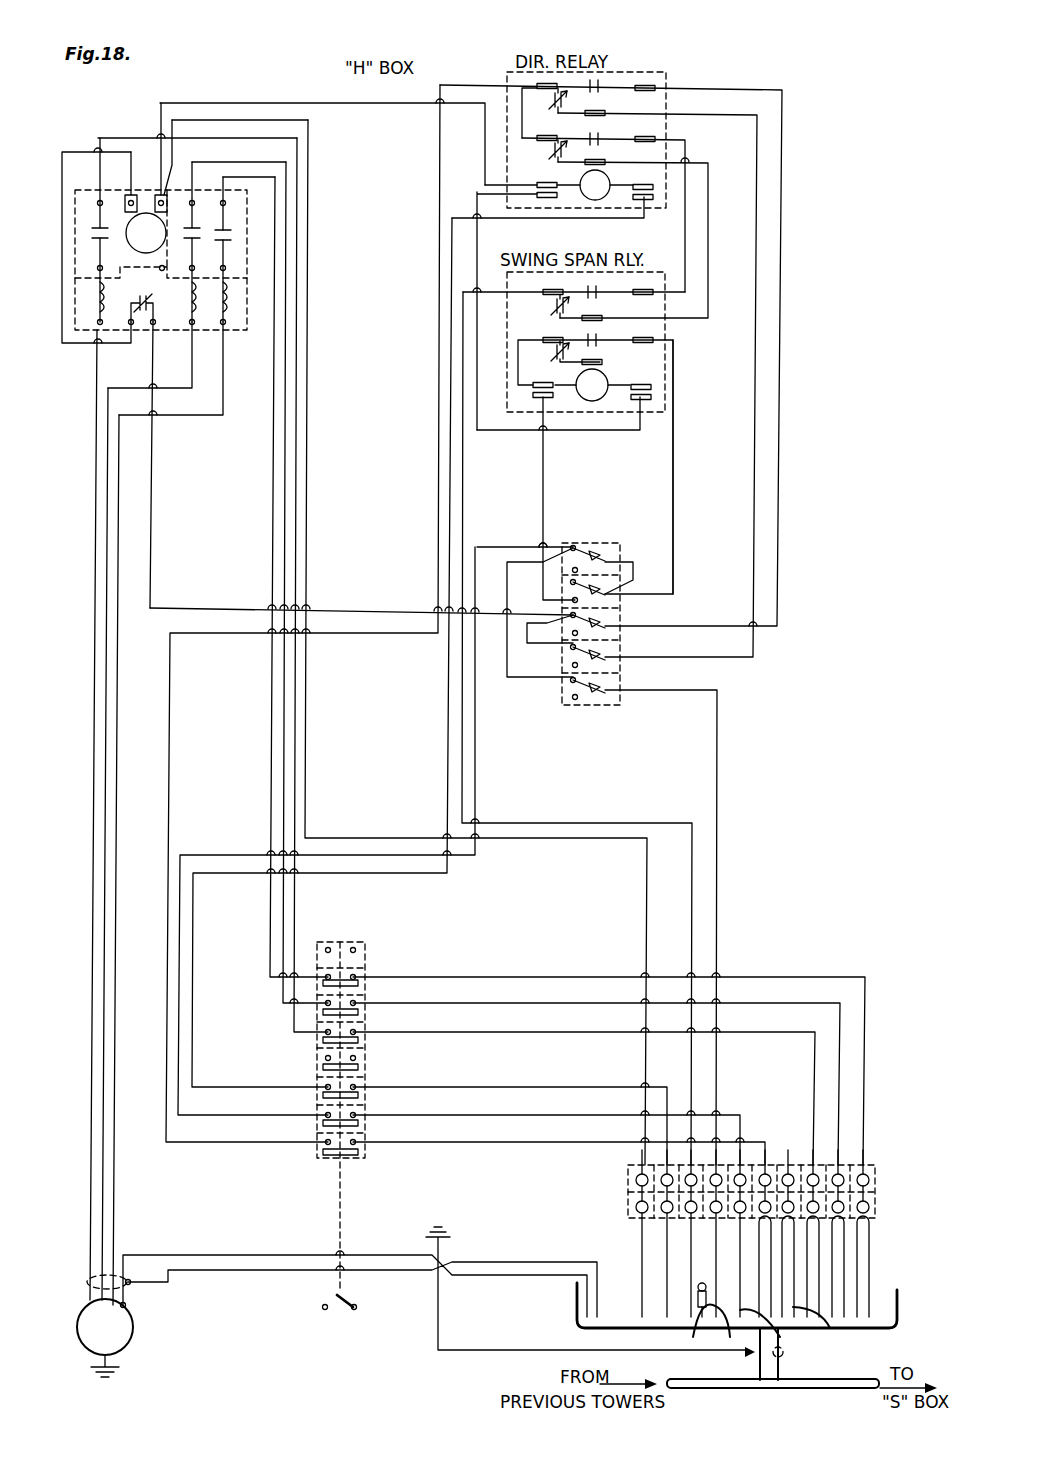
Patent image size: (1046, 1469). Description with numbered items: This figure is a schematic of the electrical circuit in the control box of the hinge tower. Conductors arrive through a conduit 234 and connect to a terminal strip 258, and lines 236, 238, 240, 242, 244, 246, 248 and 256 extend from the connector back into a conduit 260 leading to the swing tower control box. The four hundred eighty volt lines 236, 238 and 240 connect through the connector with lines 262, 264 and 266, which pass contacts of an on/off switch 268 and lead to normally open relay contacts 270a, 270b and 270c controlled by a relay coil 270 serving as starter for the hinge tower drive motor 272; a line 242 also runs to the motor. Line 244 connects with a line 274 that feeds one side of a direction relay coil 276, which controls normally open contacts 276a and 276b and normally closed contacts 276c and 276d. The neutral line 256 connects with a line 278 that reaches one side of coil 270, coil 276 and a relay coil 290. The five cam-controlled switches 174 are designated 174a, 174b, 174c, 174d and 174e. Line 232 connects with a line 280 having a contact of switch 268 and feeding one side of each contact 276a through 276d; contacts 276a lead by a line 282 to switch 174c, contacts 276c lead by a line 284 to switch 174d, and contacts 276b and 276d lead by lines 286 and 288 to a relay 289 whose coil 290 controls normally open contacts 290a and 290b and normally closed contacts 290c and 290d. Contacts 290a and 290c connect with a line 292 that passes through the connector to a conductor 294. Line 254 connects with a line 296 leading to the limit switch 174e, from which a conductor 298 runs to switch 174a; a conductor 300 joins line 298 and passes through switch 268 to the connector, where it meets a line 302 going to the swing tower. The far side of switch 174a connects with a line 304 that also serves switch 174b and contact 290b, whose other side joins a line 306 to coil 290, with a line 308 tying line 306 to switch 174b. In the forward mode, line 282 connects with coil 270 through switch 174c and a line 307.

The switches 174 is at (592, 621).
The switch 174a is at (590, 546).
The switch 174b is at (585, 588).
The switch 174c is at (602, 620).
The switch 174d is at (604, 654).
The limit switch 174e is at (573, 700).
The line 232 is at (665, 1228).
The conduit 234 is at (686, 1374).
The 480 volt line 236 is at (871, 1228).
The 480 volt line 238 is at (818, 1278).
The 480 volt line 240 is at (845, 1255).
The line 242 is at (250, 1275).
The line 244 is at (781, 1336).
The line 246 is at (830, 1336).
The line 248 is at (697, 1333).
The line 254 is at (719, 1286).
The neutral line 256 is at (638, 1243).
The terminal strip 258 is at (630, 1176).
The conduit 260 is at (836, 1392).
The line 262 is at (274, 430).
The line 264 is at (297, 485).
The line 266 is at (286, 458).
The on/off switch 268 is at (346, 1299).
The relay coil 270 is at (144, 216).
The relay contact 270a is at (221, 228).
The relay contact 270b is at (93, 227).
The relay contact 270c is at (232, 258).
The drive motor 272 is at (133, 1327).
The line 274 is at (452, 255).
The direction relay coil 276 is at (609, 180).
The normally open contact 276a is at (603, 83).
The normally open contact 276b is at (660, 114).
The normally closed contact 276c is at (522, 111).
The normally closed contact 276d is at (547, 157).
The neutral line 278 is at (316, 103).
The line 280 is at (170, 740).
The line 282 is at (778, 400).
The line 284 is at (752, 436).
The line 286 is at (686, 144).
The line 288 is at (708, 226).
The relay 289 is at (665, 370).
The relay coil 290 is at (605, 376).
The normally open contact 290a is at (601, 280).
The normally open contact 290b is at (601, 326).
The normally closed contact 290c is at (563, 308).
The normally closed contact 290d is at (555, 354).
The line 292 is at (463, 333).
The conductor 294 is at (690, 1257).
The line 296 is at (718, 871).
The conductor 298 is at (507, 665).
The conductor 300 is at (484, 544).
The line 302 is at (783, 1360).
The line 304 is at (674, 490).
The line 306 is at (518, 358).
The line 307 is at (153, 527).
The line 308 is at (543, 448).